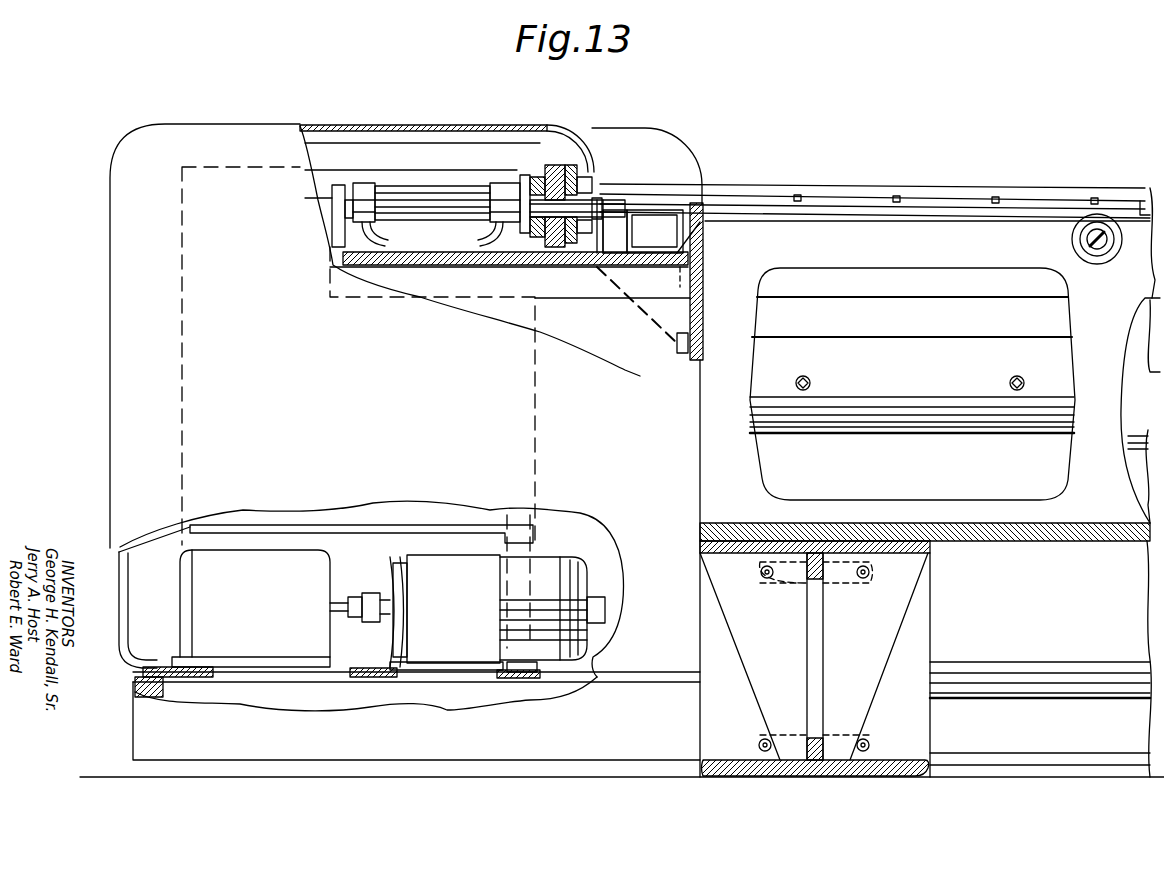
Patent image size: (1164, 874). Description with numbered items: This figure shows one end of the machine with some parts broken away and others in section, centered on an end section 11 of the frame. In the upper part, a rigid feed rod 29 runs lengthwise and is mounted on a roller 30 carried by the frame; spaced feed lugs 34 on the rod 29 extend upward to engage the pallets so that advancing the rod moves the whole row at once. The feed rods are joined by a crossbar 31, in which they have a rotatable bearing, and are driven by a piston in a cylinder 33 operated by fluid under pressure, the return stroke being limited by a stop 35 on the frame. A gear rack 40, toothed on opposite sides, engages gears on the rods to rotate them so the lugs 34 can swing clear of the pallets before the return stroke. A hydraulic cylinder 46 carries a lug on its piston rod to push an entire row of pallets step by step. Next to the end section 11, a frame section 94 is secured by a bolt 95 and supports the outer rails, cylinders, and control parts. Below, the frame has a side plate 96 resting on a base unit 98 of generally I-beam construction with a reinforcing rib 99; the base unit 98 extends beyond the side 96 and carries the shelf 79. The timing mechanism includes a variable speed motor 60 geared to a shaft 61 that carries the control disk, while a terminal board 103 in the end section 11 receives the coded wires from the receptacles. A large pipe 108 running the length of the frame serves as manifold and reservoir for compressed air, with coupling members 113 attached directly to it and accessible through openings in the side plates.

The end section 11 is at (406, 375).
The feed rod 29 is at (882, 209).
The roller 30 is at (1072, 239).
The crossbar 31 is at (577, 216).
The cylinder 33 is at (460, 207).
The feed lug 34 is at (895, 198).
The stop 35 is at (576, 168).
The gear rack 40 is at (552, 160).
The hydraulic cylinder 46 is at (650, 227).
The variable speed motor 60 is at (472, 545).
The shaft 61 is at (340, 603).
The shelf 79 is at (1102, 541).
The frame section 94 is at (590, 268).
The bolt 95 is at (677, 345).
The side plate 96 is at (1078, 452).
The base unit 98 is at (940, 633).
The reinforcing rib 99 is at (818, 657).
The terminal board 103 is at (178, 387).
The pipe 108 is at (968, 426).
The coupling member 113 is at (810, 378).